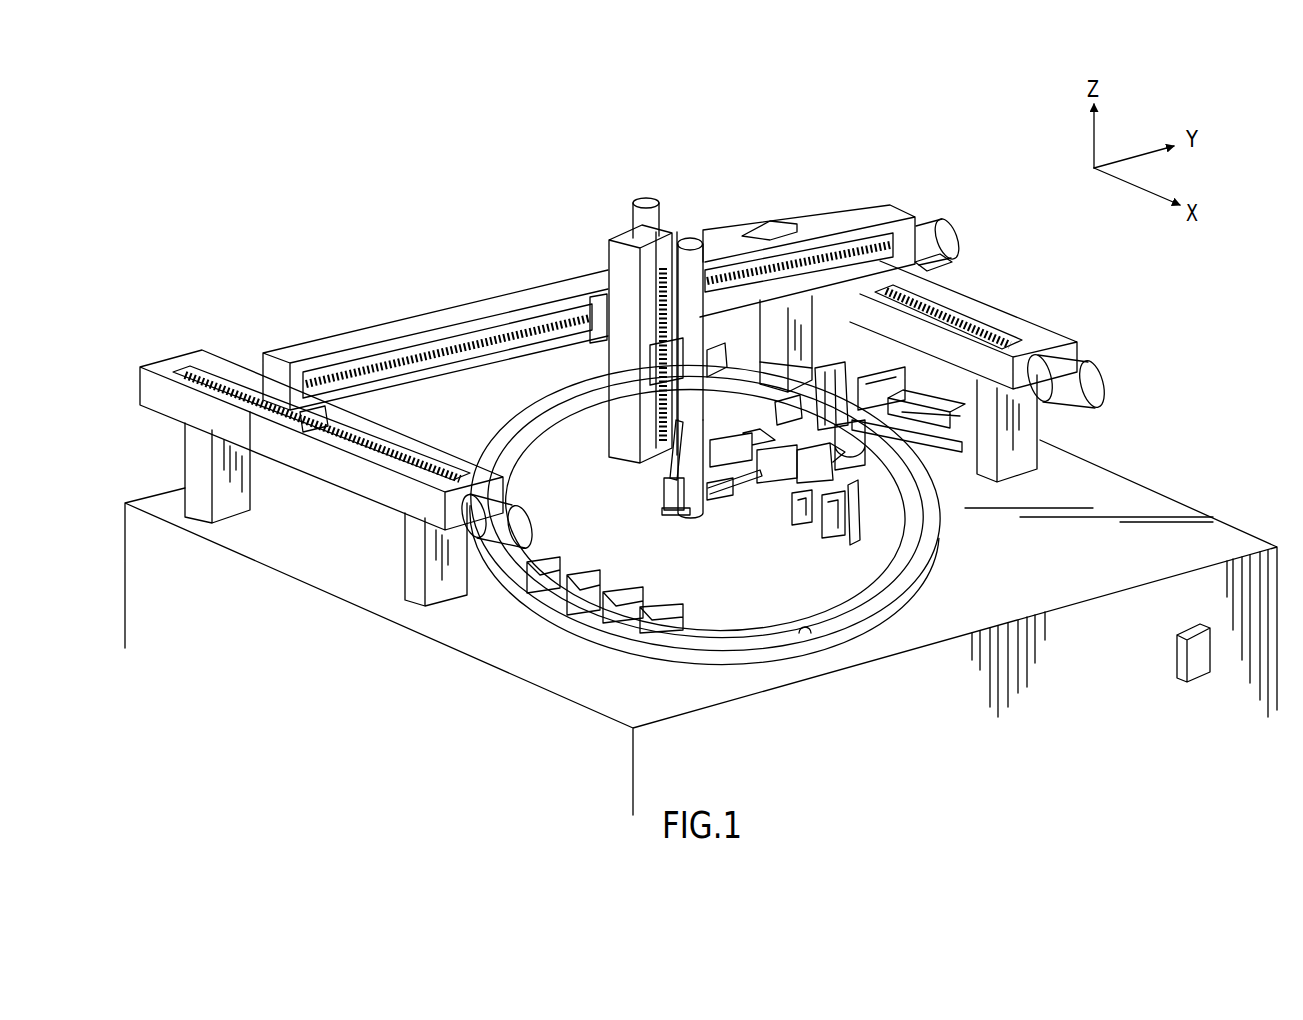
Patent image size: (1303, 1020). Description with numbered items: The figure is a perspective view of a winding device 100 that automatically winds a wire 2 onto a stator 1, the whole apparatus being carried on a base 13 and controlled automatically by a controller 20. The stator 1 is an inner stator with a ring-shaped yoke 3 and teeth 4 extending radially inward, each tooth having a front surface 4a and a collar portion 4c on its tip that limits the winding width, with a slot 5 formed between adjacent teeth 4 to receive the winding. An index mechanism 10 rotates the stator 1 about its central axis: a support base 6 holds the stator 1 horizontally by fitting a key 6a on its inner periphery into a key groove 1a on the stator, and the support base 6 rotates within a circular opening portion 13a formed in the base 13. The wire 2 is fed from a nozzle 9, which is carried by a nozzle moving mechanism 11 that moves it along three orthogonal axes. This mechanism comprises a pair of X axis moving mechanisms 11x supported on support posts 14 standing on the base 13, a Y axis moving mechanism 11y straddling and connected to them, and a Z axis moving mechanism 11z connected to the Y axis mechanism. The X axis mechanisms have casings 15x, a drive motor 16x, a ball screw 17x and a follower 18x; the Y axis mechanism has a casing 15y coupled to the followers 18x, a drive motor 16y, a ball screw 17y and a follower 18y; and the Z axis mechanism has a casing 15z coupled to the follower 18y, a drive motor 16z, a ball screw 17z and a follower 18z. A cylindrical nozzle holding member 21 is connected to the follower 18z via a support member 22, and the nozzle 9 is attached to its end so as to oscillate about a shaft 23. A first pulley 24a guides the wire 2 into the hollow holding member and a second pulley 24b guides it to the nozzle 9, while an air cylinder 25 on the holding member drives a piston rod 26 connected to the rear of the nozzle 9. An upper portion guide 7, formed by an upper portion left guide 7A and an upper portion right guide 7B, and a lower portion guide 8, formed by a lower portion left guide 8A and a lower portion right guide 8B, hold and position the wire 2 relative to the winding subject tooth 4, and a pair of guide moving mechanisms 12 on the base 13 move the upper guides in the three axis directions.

The winding device 100 is at (887, 146).
The stator 1 is at (758, 652).
The key groove 1a is at (610, 640).
The wire 2 is at (738, 478).
The yoke 3 is at (920, 590).
The teeth 4 is at (944, 556).
The front surface 4a is at (798, 470).
The collar portion 4c is at (890, 595).
The slot 5 is at (948, 521).
The support base 6 is at (858, 622).
The key 6a is at (592, 634).
The upper portion guide 7 is at (849, 411).
The upper portion left guide 7A is at (790, 400).
The upper portion right guide 7B is at (898, 450).
The lower portion guide 8 is at (788, 547).
The lower portion left guide 8A is at (793, 507).
The lower portion right guide 8B is at (838, 547).
The nozzle 9 is at (713, 490).
The index mechanism 10 is at (717, 674).
The nozzle moving mechanism 11 is at (820, 213).
The X axis moving mechanisms 11x is at (636, 470).
The Y axis moving mechanism 11y is at (613, 274).
The Z axis moving mechanism 11z is at (664, 353).
The guide moving mechanisms 12 is at (835, 352).
The base 13 is at (1150, 506).
The circular opening portion 13a is at (806, 640).
The support posts 14 is at (197, 458).
The casings 15x is at (172, 368).
The casing 15y is at (413, 318).
The casing 15z is at (626, 237).
The drive motor 16x is at (497, 516).
The drive motor 16y is at (940, 225).
The drive motor 16z is at (646, 203).
The ball screw 17x is at (380, 452).
The ball screw 17y is at (862, 243).
The ball screw 17z is at (650, 322).
The follower 18x is at (320, 388).
The follower 18y is at (583, 316).
The follower 18z is at (650, 372).
The controller 20 is at (1203, 664).
The nozzle holding member 21 is at (693, 310).
The support member 22 is at (722, 348).
The shaft 23 is at (692, 514).
The first pulley 24a is at (690, 246).
The second pulley 24b is at (678, 516).
The air cylinder 25 is at (672, 462).
The piston rod 26 is at (665, 490).